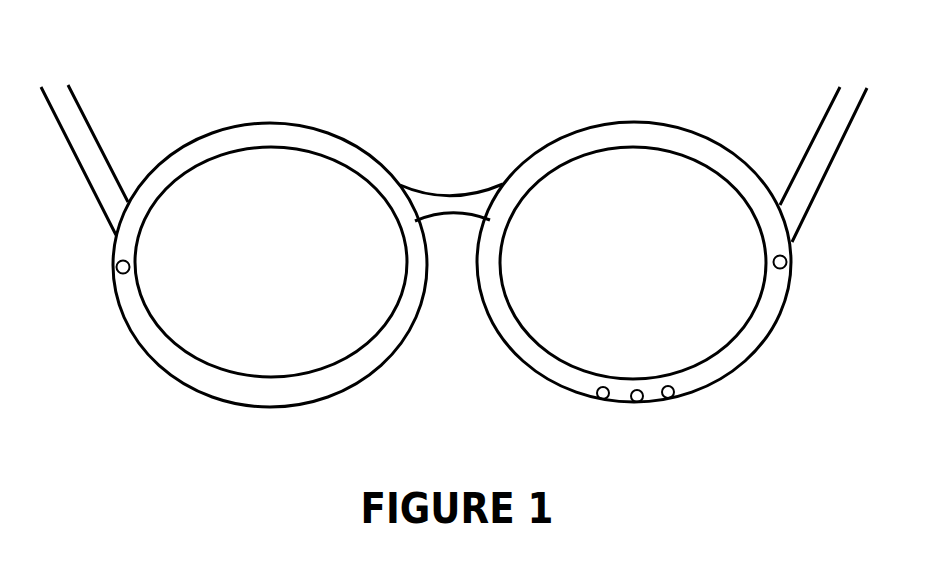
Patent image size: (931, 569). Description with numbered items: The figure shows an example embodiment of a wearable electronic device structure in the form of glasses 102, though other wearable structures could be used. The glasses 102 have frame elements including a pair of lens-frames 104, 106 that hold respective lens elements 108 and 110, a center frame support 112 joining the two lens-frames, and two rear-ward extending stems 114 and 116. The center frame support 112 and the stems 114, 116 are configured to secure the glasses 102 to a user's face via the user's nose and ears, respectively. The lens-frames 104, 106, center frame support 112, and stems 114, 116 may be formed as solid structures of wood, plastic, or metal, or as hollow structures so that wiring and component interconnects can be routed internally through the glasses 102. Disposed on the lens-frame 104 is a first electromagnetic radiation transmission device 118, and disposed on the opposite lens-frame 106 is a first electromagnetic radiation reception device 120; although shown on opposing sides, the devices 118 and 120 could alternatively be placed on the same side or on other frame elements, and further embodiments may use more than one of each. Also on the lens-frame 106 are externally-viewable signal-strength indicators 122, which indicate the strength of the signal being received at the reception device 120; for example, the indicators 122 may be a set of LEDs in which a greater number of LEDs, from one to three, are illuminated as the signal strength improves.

The glasses 102 is at (371, 90).
The lens-frame 104 is at (232, 125).
The lens-frame 106 is at (607, 123).
The lens element 108 is at (200, 333).
The lens element 110 is at (572, 352).
The center frame support 112 is at (447, 193).
The stem 114 is at (67, 115).
The stem 116 is at (833, 128).
The first electromagnetic radiation transmission device 118 is at (120, 261).
The first electromagnetic radiation reception device 120 is at (783, 256).
The signal-strength indicators 122 is at (668, 398).